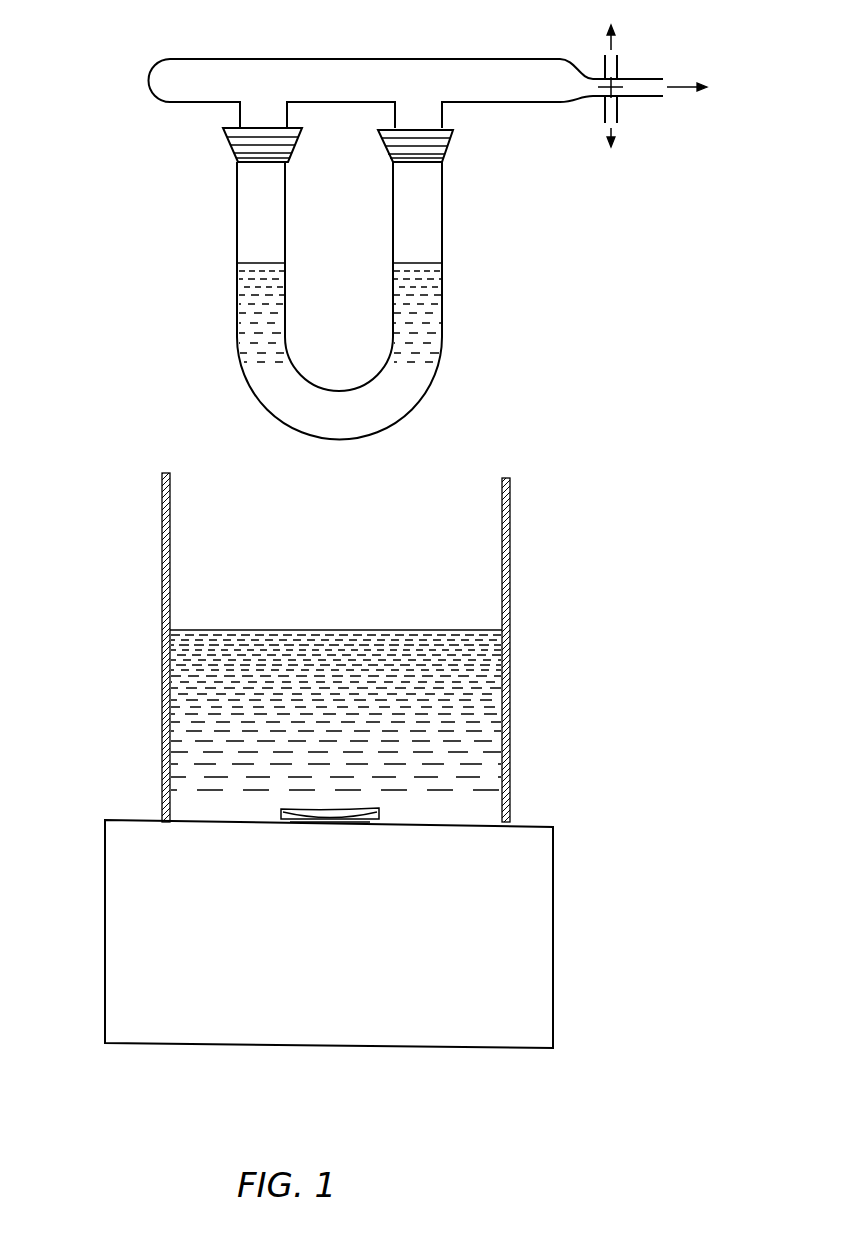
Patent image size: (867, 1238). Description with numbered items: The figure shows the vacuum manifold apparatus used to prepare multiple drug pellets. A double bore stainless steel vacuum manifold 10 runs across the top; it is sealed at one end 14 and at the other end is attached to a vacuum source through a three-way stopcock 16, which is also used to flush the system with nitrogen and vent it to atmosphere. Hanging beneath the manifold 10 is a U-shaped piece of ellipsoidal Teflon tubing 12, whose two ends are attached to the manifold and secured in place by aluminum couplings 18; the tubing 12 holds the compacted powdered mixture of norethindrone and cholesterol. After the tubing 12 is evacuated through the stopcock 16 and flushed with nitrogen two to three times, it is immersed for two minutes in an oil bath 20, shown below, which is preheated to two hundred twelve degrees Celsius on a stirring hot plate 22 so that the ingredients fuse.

The vacuum manifold 10 is at (268, 65).
The Teflon tubing 12 is at (443, 238).
The sealed end 14 is at (148, 81).
The three-way stopcock 16 is at (593, 78).
The aluminum couplings 18 is at (386, 150).
The oil bath 20 is at (162, 643).
The stirring hot plate 22 is at (105, 1010).